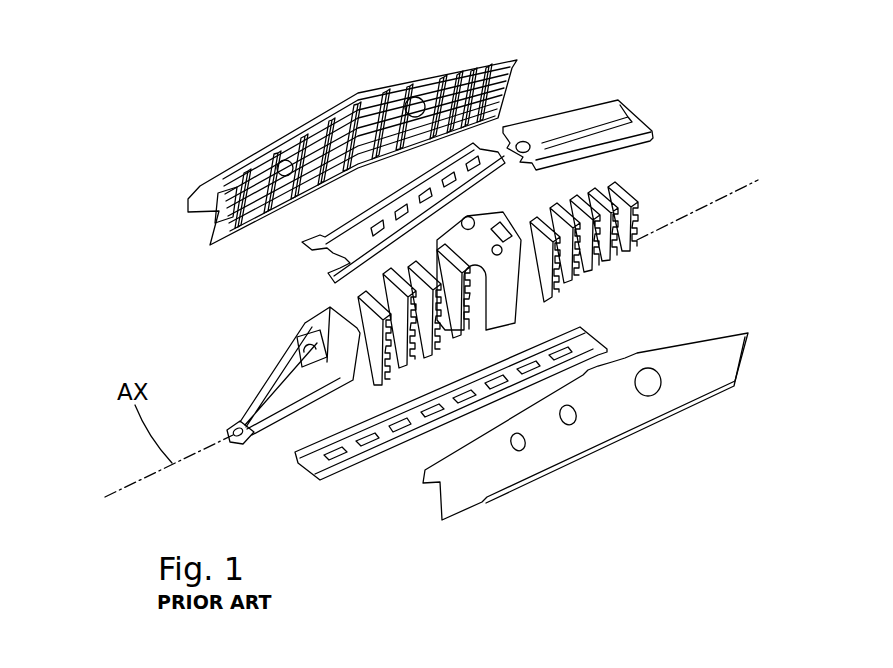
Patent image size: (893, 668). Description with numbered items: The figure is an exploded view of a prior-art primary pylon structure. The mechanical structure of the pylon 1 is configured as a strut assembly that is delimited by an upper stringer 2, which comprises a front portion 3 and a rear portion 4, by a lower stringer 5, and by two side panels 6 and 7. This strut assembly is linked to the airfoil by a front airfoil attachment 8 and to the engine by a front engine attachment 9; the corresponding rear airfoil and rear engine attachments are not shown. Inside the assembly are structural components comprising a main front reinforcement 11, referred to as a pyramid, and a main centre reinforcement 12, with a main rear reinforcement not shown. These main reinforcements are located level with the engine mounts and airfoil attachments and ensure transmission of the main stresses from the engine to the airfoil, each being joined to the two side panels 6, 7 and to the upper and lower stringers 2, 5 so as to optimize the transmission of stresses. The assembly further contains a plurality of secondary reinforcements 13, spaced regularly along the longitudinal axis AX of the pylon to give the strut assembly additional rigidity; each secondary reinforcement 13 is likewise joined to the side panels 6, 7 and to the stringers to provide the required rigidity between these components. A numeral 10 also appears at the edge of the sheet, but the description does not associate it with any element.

The pylon 1 is at (184, 108).
The upper stringer 2 is at (549, 90).
The front portion 3 is at (323, 258).
The rear portion 4 is at (620, 112).
The lower stringer 5 is at (300, 461).
The side panel 6 is at (207, 186).
The side panel 7 is at (490, 488).
The front airfoil attachment 8 is at (507, 245).
The front engine attachment 9 is at (232, 425).
The housing 10 is at (447, 661).
The main front reinforcement 11 is at (266, 344).
The main centre reinforcement 12 is at (520, 303).
The secondary reinforcement 13 is at (633, 203).